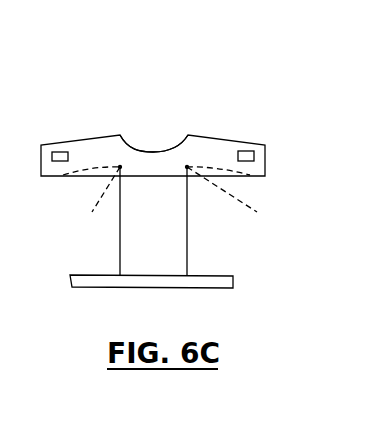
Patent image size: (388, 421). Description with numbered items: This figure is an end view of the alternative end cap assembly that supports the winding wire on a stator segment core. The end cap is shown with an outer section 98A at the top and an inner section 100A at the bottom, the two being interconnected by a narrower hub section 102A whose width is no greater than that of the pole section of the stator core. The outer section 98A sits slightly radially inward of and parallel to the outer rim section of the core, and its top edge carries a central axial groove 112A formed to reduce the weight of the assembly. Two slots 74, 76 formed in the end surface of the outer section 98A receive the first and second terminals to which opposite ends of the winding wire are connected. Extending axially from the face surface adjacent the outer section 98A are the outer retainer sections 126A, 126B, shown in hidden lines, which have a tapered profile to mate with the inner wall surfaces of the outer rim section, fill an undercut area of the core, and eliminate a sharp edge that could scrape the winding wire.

The slot 74 is at (58, 151).
The slot 76 is at (248, 150).
The outer section 98A is at (265, 162).
The inner section 100A is at (213, 275).
The hub section 102A is at (128, 235).
The central axial groove 112A is at (145, 150).
The outer retainer section 126A is at (82, 195).
The outer retainer section 126B is at (248, 193).